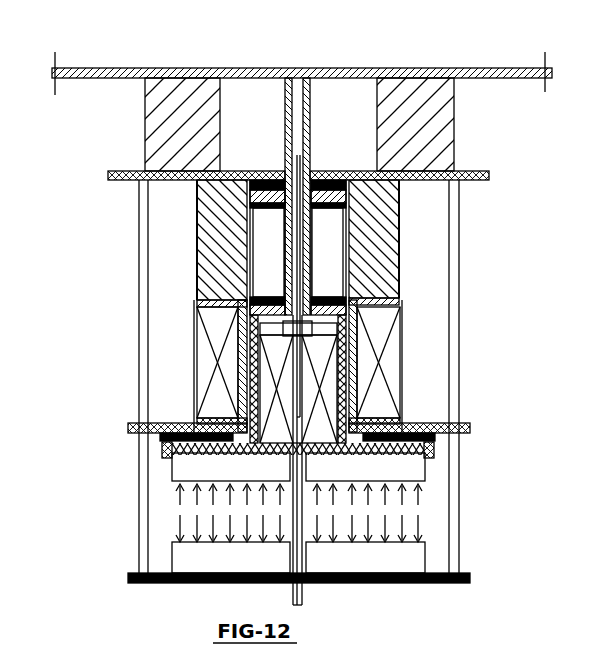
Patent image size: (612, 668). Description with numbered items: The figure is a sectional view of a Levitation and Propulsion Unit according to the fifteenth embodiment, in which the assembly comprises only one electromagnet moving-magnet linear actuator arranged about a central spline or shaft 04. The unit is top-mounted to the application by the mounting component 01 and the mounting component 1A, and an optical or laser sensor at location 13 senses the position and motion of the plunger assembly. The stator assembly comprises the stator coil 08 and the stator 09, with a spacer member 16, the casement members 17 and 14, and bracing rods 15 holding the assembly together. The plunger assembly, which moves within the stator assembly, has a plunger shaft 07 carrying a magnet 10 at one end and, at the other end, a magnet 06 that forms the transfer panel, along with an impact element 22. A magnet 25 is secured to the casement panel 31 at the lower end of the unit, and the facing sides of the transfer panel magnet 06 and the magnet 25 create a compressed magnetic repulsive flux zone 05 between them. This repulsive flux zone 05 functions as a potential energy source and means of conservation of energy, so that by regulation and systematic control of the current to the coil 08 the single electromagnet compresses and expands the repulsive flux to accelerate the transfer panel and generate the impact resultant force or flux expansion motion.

The mounting component 01 is at (496, 60).
The mounting component 1A is at (172, 107).
The optical/laser sensor location 13 is at (336, 108).
The central spline or shaft 04 is at (303, 582).
The casement member 14 is at (489, 172).
The impact element 22 is at (262, 171).
The magnet 10 is at (336, 263).
The spacer member 16 is at (222, 197).
The casement member 17 is at (196, 280).
The bracing rods 15 is at (460, 268).
The stator 09 is at (375, 315).
The plunger shaft 07 is at (252, 392).
The stator coil 08 is at (382, 338).
The magnet (transfer panel) 06 is at (420, 465).
The magnetic repulsive flux zone 05 is at (420, 521).
The magnet 25 is at (212, 555).
The casement member (casement panel) 31 is at (471, 578).